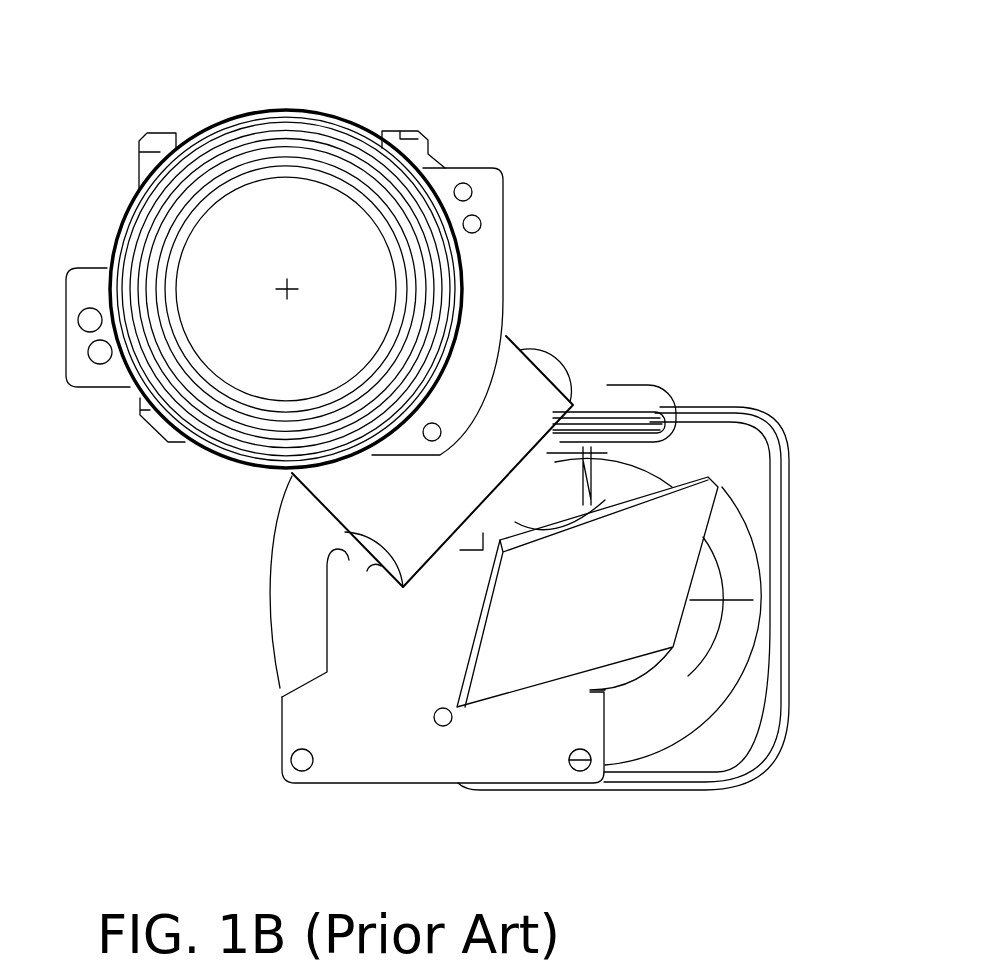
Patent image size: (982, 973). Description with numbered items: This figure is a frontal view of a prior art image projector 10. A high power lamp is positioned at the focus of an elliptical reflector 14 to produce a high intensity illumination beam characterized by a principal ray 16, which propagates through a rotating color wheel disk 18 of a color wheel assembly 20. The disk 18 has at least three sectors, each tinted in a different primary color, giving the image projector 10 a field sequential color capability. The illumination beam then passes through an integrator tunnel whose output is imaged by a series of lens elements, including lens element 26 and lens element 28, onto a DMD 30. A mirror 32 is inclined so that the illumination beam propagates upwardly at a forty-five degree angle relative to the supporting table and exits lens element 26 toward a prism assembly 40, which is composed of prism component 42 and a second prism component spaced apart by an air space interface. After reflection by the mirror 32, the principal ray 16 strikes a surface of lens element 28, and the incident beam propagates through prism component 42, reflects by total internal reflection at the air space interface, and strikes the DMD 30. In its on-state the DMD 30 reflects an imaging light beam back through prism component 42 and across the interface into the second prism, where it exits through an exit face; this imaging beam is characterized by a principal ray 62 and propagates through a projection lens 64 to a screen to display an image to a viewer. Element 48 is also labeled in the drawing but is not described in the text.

The image projector 10 is at (148, 710).
The elliptical reflector 14 is at (733, 492).
The principal ray 16 is at (522, 525).
The color wheel disk 18 is at (302, 571).
The color wheel assembly 20 is at (577, 822).
The lens element 26 is at (648, 660).
The lens element 28 is at (655, 383).
The DMD 30 is at (393, 138).
The mirror 32 is at (562, 604).
The prism assembly 40 is at (276, 490).
The prism component 42 is at (530, 331).
The post 48 is at (520, 528).
The principal ray 62 is at (291, 294).
The projection lens 64 is at (268, 110).